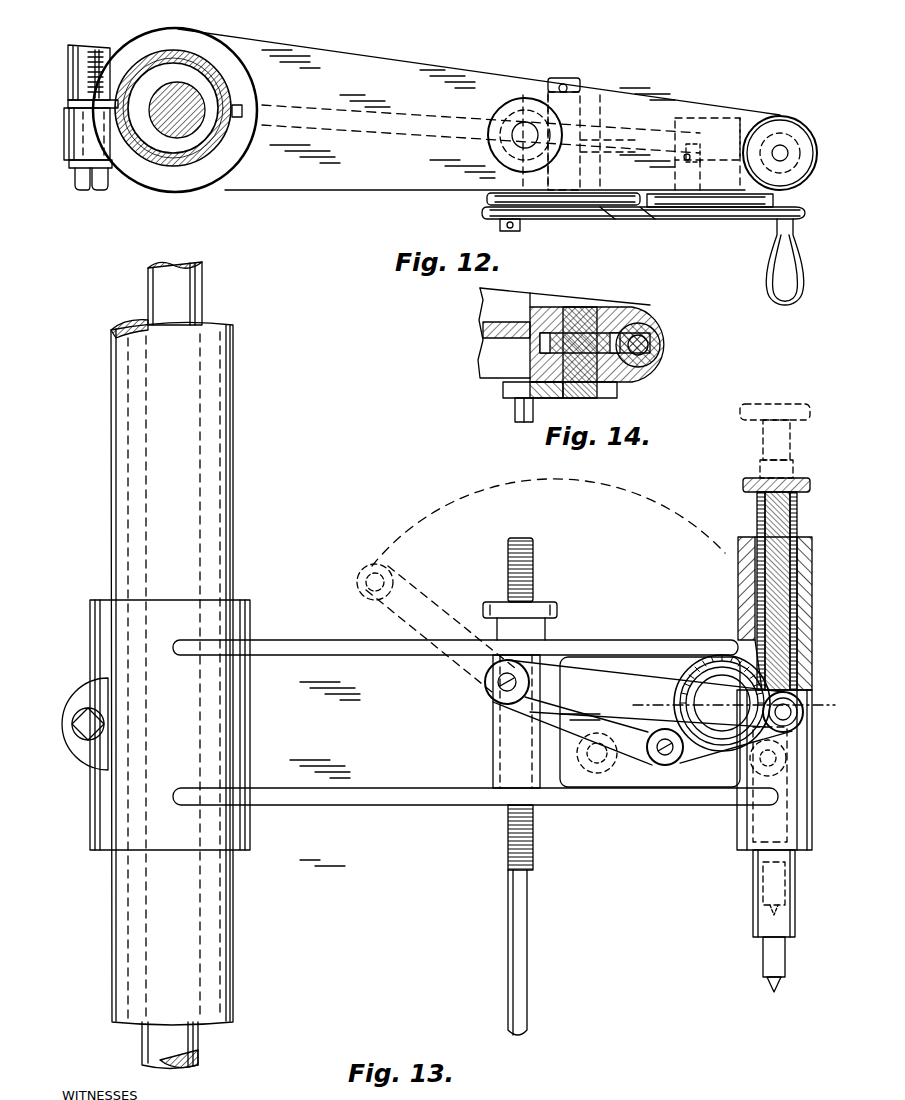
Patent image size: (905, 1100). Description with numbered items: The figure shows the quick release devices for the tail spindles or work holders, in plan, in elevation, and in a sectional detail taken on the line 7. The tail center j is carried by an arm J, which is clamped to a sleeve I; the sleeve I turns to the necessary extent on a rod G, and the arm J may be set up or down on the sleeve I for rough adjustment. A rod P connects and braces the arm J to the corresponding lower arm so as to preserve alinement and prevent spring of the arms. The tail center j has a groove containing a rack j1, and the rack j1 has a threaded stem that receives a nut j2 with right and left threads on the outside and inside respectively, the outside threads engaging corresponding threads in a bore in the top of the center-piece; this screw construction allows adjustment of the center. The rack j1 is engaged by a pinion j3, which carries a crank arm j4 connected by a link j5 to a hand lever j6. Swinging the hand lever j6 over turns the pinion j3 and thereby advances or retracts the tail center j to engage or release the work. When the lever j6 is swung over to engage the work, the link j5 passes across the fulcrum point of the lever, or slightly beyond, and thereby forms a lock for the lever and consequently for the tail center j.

In FIG. 12, the rod G is at (200, 100).
In FIG. 13, the rod G is at (175, 300).
In FIG. 12, the sleeve I is at (192, 163).
In FIG. 13, the sleeve I is at (205, 425).
In FIG. 12, the arm J is at (390, 180).
In FIG. 13, the arm J is at (400, 800).
In FIG. 12, the rod P is at (522, 140).
In FIG. 13, the rod P is at (520, 884).
In FIG. 13, the tail center j is at (770, 877).
In FIG. 14, the rack j1 is at (668, 345).
In FIG. 13, the rack j1 is at (745, 634).
In FIG. 12, the nut j2 is at (778, 130).
In FIG. 13, the nut j2 is at (745, 489).
In FIG. 12, the pinion j3 is at (722, 150).
In FIG. 14, the pinion j3 is at (585, 305).
In FIG. 13, the pinion j3 is at (708, 670).
In FIG. 12, the crank arm j4 is at (712, 207).
In FIG. 14, the crank arm j4 is at (527, 388).
In FIG. 13, the crank arm j4 is at (692, 762).
In FIG. 12, the link j5 is at (618, 219).
In FIG. 13, the link j5 is at (625, 735).
In FIG. 12, the hand lever j6 is at (563, 205).
In FIG. 13, the hand lever j6 is at (598, 690).
In FIG. 13, the section line 7 is at (732, 707).